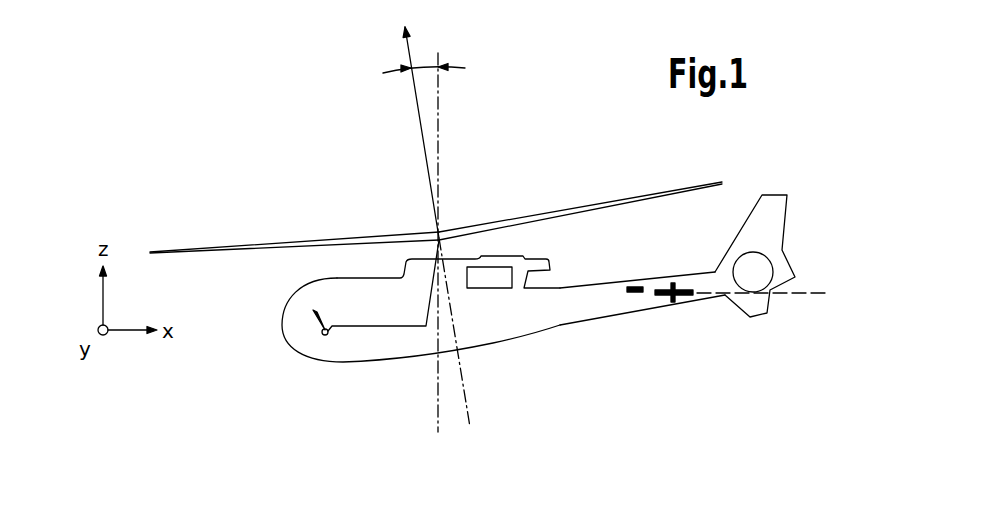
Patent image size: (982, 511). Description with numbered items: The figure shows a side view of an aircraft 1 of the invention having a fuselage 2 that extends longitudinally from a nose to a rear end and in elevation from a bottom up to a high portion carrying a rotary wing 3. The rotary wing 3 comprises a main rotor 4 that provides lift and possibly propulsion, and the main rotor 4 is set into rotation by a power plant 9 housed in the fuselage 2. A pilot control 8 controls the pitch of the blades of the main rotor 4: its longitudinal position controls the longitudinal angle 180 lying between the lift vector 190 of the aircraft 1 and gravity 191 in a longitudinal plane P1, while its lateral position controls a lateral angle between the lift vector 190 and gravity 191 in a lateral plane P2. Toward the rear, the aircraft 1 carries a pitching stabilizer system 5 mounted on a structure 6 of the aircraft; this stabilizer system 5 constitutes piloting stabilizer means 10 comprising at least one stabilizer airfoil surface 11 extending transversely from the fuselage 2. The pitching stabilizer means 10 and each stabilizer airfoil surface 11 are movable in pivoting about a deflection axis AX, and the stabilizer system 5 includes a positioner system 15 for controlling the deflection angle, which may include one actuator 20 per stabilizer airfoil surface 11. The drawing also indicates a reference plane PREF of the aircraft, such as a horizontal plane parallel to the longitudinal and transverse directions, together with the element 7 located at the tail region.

The aircraft 1 is at (262, 340).
The fuselage 2 is at (348, 357).
The rotary wing 3 is at (422, 203).
The main rotor 4 is at (261, 236).
The pitching stabilizer system 5 is at (642, 330).
The structure 6 is at (637, 313).
The tail fin with fenestron 7 is at (766, 258).
The pilot control 8 is at (321, 333).
The power plant 9 is at (497, 289).
The pitching stabilizer means 10 is at (662, 331).
The stabilizer airfoil surface 11 is at (683, 303).
The positioner system 15 is at (631, 272).
The actuator 20 is at (676, 285).
The longitudinal angle 180 is at (423, 64).
The lift vector 190 is at (417, 107).
The gravity 191 is at (440, 105).
The deflection axis AX is at (673, 283).
The longitudinal plane P1 is at (853, 281).
The lateral plane P2 is at (437, 405).
The reference plane PREF is at (815, 295).